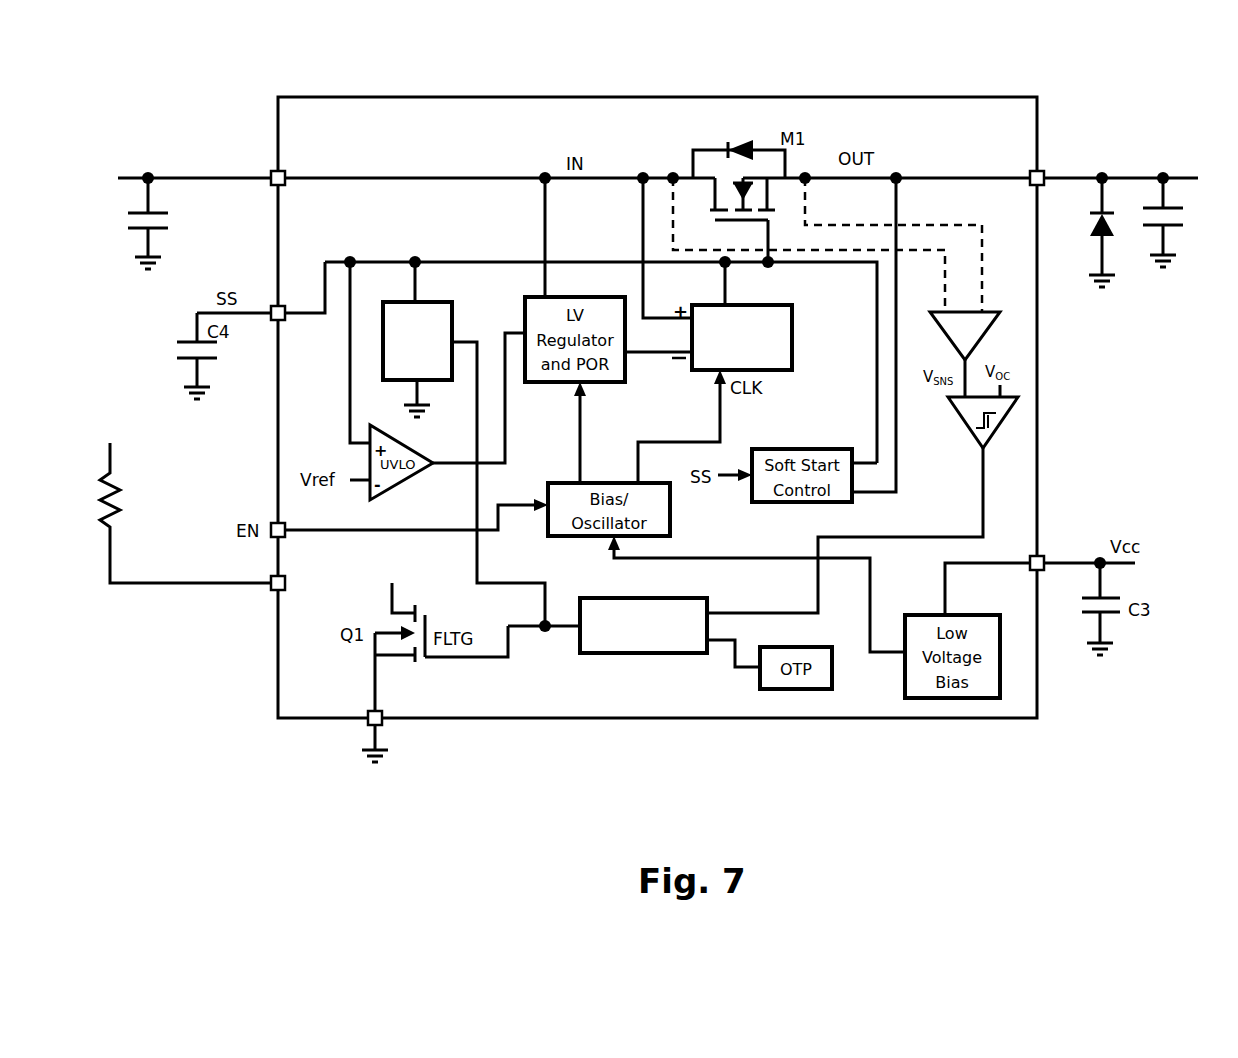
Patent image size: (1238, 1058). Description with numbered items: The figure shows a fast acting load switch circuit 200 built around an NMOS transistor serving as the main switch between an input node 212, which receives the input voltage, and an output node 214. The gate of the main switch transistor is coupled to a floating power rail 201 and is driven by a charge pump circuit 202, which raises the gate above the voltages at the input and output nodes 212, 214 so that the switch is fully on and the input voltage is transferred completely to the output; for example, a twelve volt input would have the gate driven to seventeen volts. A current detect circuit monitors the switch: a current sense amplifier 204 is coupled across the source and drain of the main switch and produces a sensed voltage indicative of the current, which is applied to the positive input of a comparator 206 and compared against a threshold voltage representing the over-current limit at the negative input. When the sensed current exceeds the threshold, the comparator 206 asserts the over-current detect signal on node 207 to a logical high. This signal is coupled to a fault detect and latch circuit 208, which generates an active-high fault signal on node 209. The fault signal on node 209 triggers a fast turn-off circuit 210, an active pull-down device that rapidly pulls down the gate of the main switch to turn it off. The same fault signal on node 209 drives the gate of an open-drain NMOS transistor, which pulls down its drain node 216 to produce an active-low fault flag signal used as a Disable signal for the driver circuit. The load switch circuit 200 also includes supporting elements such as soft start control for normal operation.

The fast acting load switch circuit 200 is at (985, 97).
The floating power rail 201 is at (464, 260).
The charge pump circuit 202 is at (792, 340).
The current sense amplifier 204 is at (992, 337).
The comparator 206 is at (970, 430).
The over-current detect (OCD) signal node 207 is at (983, 500).
The fault detect and latch circuit 208 is at (640, 654).
The fault signal node 209 is at (477, 483).
The fast turn-off circuit 210 is at (452, 322).
The input node 212 is at (205, 175).
The output node 214 is at (1142, 177).
The drain node 216 is at (168, 582).